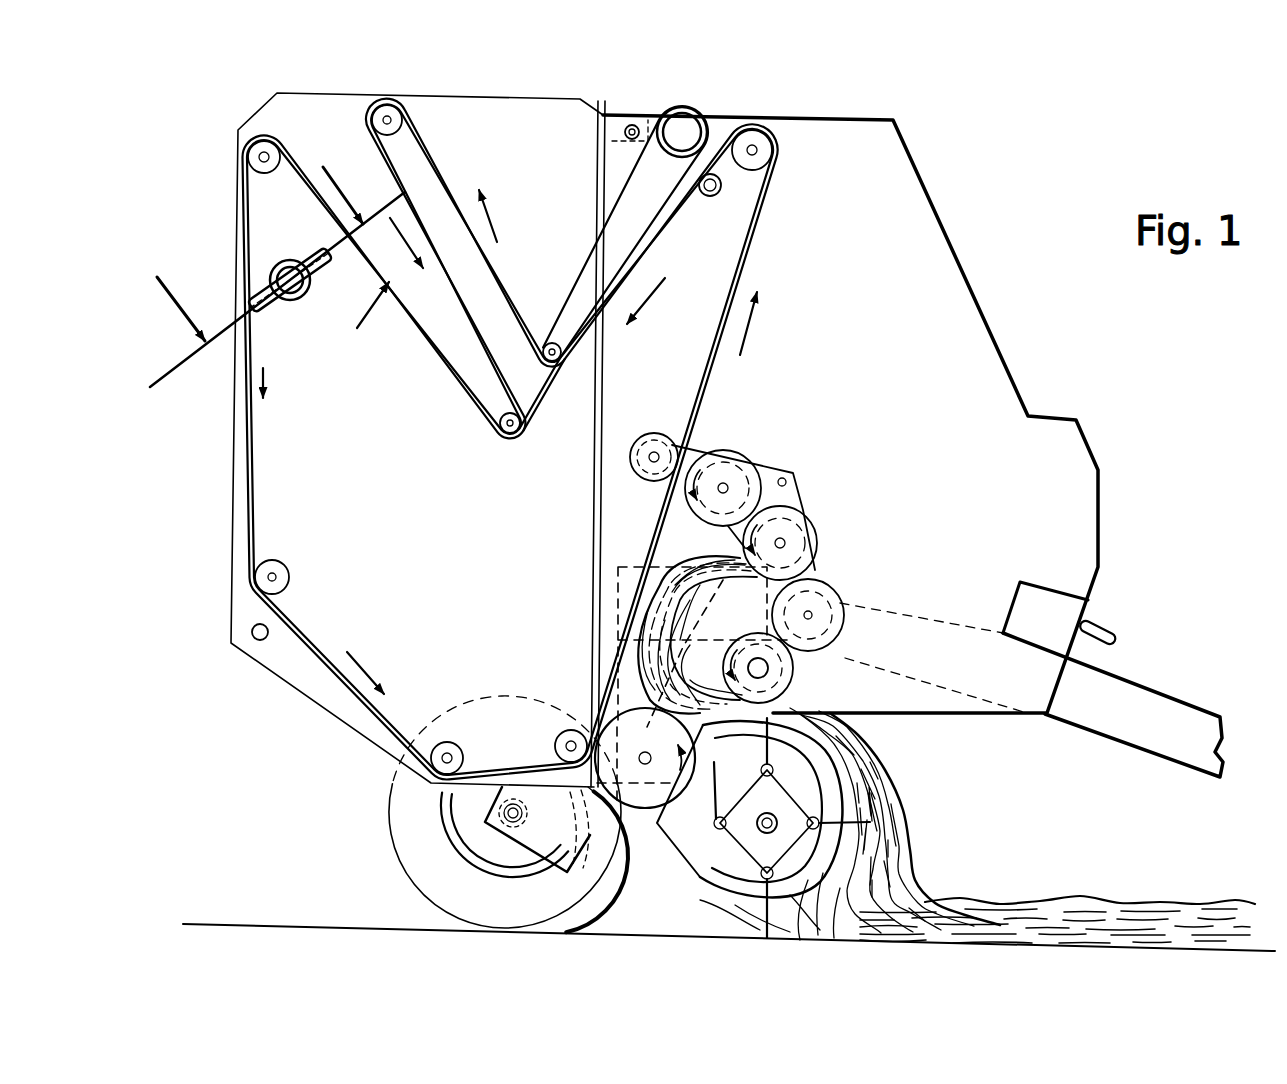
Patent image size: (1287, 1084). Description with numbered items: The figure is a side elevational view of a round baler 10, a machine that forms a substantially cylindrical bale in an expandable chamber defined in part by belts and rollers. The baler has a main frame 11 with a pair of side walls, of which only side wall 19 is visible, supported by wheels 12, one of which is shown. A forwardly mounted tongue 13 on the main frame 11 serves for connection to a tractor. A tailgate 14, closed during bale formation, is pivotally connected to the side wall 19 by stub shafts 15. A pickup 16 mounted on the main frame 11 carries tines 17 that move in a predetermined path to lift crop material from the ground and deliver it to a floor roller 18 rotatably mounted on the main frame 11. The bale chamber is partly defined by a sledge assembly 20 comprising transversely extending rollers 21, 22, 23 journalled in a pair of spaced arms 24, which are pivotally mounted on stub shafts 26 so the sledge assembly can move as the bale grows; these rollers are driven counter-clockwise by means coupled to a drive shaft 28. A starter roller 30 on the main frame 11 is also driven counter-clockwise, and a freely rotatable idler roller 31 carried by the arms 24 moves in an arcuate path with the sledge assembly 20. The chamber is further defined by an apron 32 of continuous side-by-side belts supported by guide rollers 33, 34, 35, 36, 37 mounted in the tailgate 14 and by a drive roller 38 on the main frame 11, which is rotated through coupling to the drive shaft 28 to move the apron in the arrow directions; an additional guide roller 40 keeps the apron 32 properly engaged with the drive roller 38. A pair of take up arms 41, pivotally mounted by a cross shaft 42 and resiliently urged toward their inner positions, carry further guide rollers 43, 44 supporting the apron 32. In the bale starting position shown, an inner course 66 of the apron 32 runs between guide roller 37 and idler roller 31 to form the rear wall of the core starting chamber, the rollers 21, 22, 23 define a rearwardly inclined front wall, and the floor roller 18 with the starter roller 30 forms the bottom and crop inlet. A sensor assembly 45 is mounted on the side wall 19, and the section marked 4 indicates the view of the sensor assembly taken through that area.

The section line 4- 4 is at (257, 257).
The round baler 10 is at (965, 172).
The main frame 11 is at (614, 570).
The wheel 12 is at (420, 857).
The tongue 13 is at (1153, 722).
The tailgate 14 is at (527, 97).
The stub shaft 15 is at (636, 120).
The pickup 16 is at (918, 786).
The tines 17 is at (712, 886).
The floor roller 18 is at (590, 891).
The side wall 19 is at (866, 255).
The sledge assembly 20 is at (822, 447).
The roller 21 is at (742, 470).
The roller 22 is at (790, 540).
The roller 23 is at (812, 632).
The arm 24 is at (782, 497).
The stub shaft 26 is at (808, 617).
The drive shaft 28 is at (1097, 626).
The starter roller 30 is at (772, 680).
The idler roller 31 is at (650, 450).
The apron 32 is at (242, 517).
The guide roller 33 is at (386, 104).
The guide roller 34 is at (268, 174).
The guide roller 35 is at (290, 577).
The guide roller 36 is at (447, 741).
The guide roller 37 is at (572, 729).
The drive roller 38 is at (772, 153).
The guide roller 40 is at (701, 197).
The take up arm 41 is at (642, 187).
The cross shaft 42 is at (694, 113).
The guide roller 43 is at (515, 437).
The guide roller 44 is at (553, 342).
The sensor assembly 45 is at (300, 308).
The inner course 66 is at (622, 660).